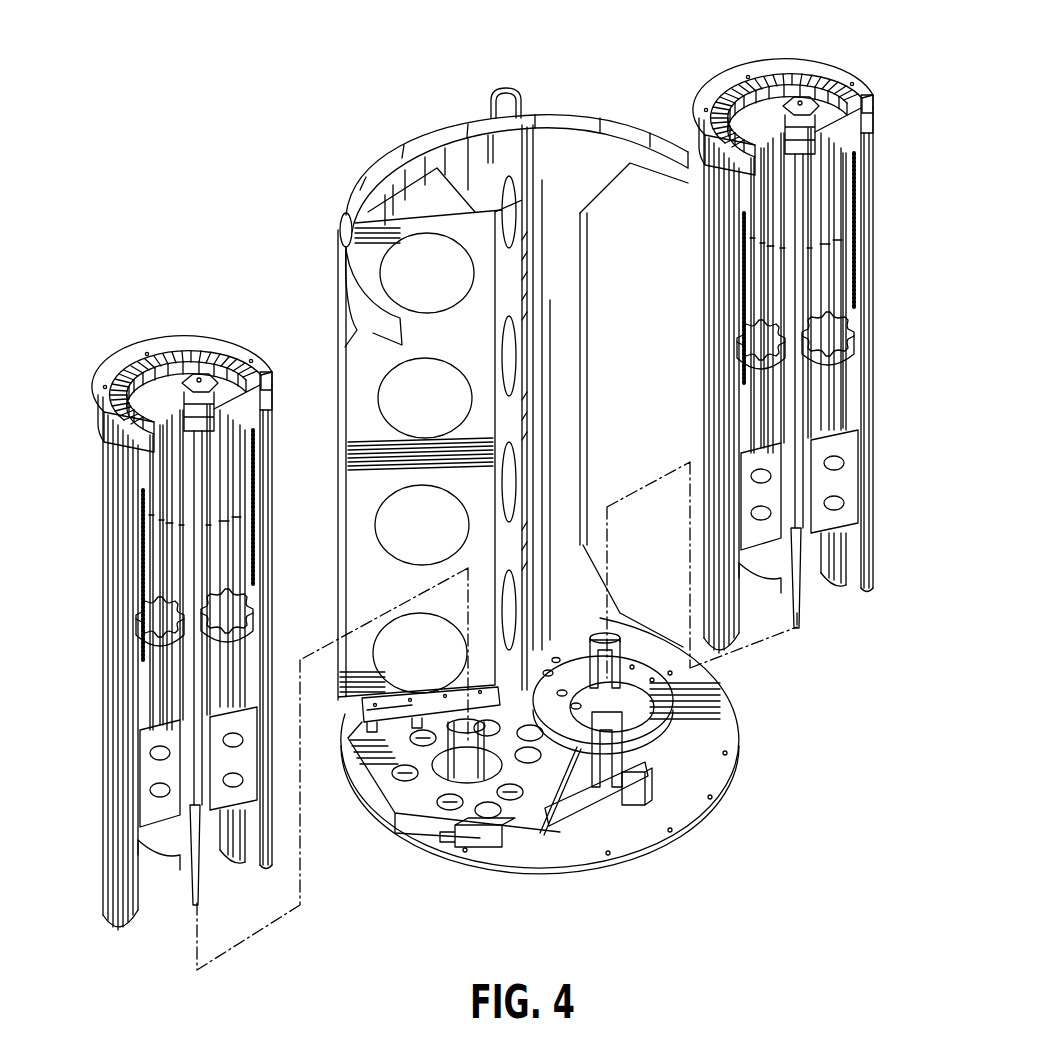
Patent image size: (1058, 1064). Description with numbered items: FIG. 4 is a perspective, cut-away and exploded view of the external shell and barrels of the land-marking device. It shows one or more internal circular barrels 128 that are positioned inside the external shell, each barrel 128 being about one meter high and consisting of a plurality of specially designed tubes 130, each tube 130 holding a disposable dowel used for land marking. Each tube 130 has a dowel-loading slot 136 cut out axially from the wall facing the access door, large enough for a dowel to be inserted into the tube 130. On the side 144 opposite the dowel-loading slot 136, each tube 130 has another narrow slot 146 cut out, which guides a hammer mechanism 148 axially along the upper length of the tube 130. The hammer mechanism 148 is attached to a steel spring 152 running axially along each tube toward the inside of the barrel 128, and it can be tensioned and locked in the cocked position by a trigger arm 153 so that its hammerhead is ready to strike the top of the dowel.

The internal circular barrel 128 is at (130, 363).
The tube 130 is at (865, 477).
The dowel-loading slot 136 is at (130, 870).
The side 144 is at (842, 547).
The narrow slot 146 is at (847, 197).
The hammer mechanism 148 is at (268, 414).
The steel spring 152 is at (258, 467).
The trigger arm 153 is at (222, 370).